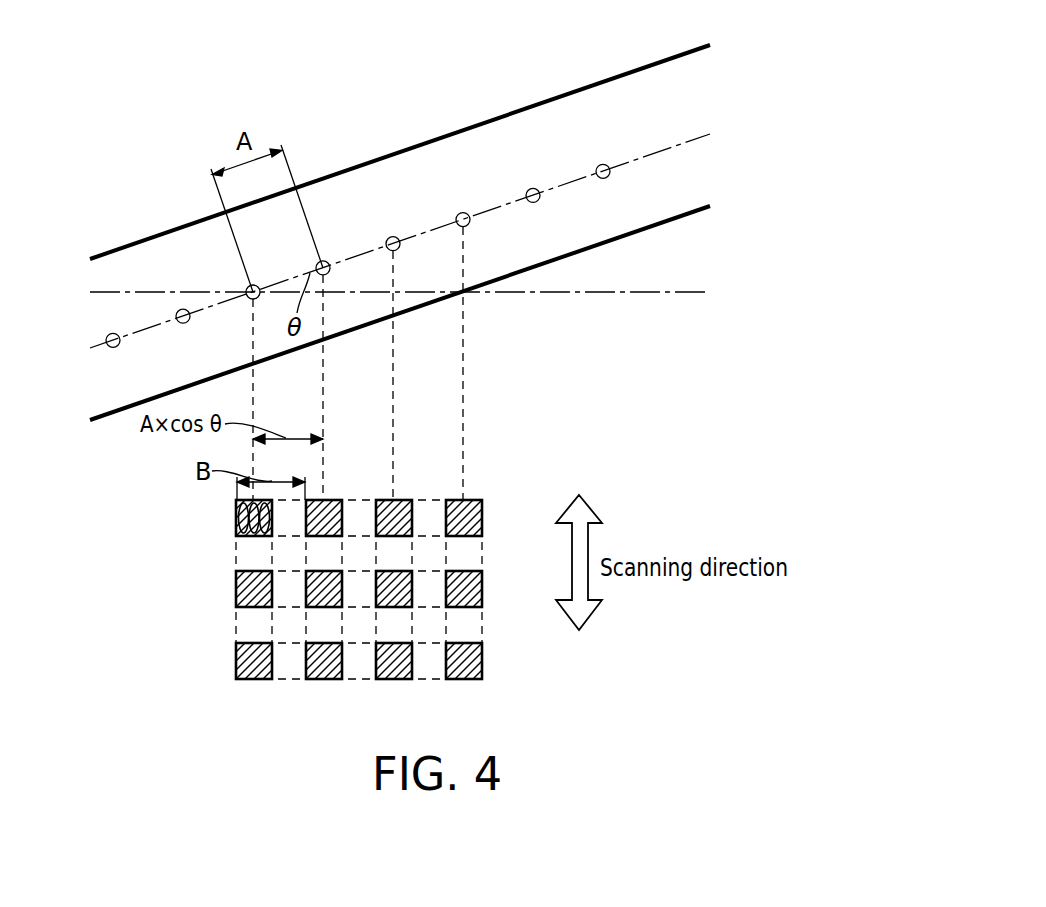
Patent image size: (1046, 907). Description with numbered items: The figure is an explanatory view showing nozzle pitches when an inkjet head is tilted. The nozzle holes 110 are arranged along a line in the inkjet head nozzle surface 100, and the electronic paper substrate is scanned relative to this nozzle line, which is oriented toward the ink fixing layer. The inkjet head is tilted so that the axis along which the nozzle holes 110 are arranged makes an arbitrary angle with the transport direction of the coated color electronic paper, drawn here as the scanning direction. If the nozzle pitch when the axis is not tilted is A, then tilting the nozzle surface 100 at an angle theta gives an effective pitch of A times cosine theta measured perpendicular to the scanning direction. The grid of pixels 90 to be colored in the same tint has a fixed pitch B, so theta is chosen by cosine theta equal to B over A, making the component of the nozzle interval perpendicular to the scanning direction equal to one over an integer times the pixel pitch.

The inkjet head nozzle surface 100 is at (602, 82).
The nozzle holes 110 is at (398, 236).
The pixel 90 is at (482, 661).